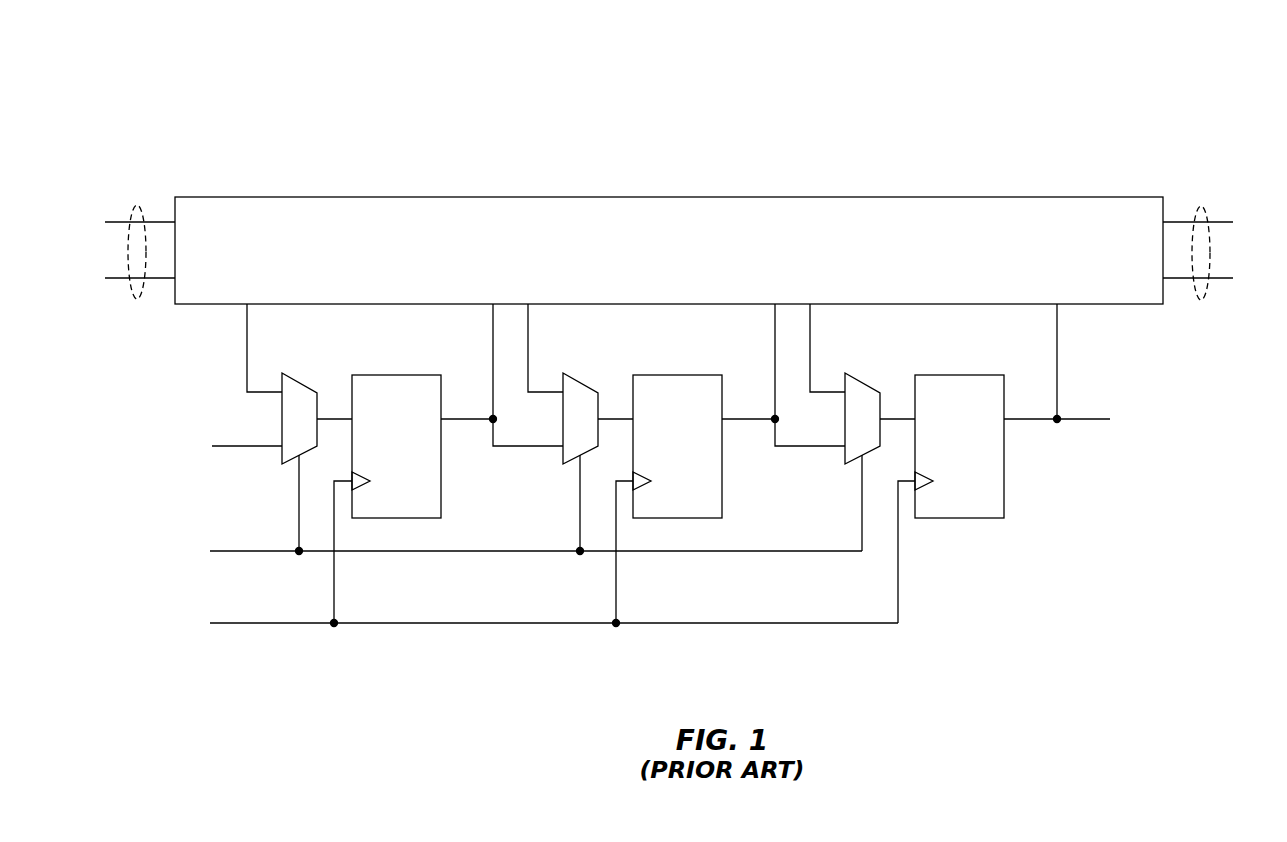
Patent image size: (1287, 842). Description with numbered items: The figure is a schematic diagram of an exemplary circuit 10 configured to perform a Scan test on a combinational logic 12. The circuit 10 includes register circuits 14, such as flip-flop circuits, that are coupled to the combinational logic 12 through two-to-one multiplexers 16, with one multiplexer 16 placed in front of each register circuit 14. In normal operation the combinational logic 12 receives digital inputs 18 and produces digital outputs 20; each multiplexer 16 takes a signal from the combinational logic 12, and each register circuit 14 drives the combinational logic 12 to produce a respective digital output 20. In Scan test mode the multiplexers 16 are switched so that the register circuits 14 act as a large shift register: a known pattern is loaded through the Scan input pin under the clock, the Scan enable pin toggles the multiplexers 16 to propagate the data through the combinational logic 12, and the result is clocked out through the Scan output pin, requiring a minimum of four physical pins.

The circuit 10 is at (1052, 91).
The combinational logic 12 is at (659, 271).
The register circuits 14 is at (389, 462).
The two-to-one multiplexers 16 is at (291, 428).
The digital inputs 18 is at (141, 205).
The digital outputs 20 is at (1198, 206).